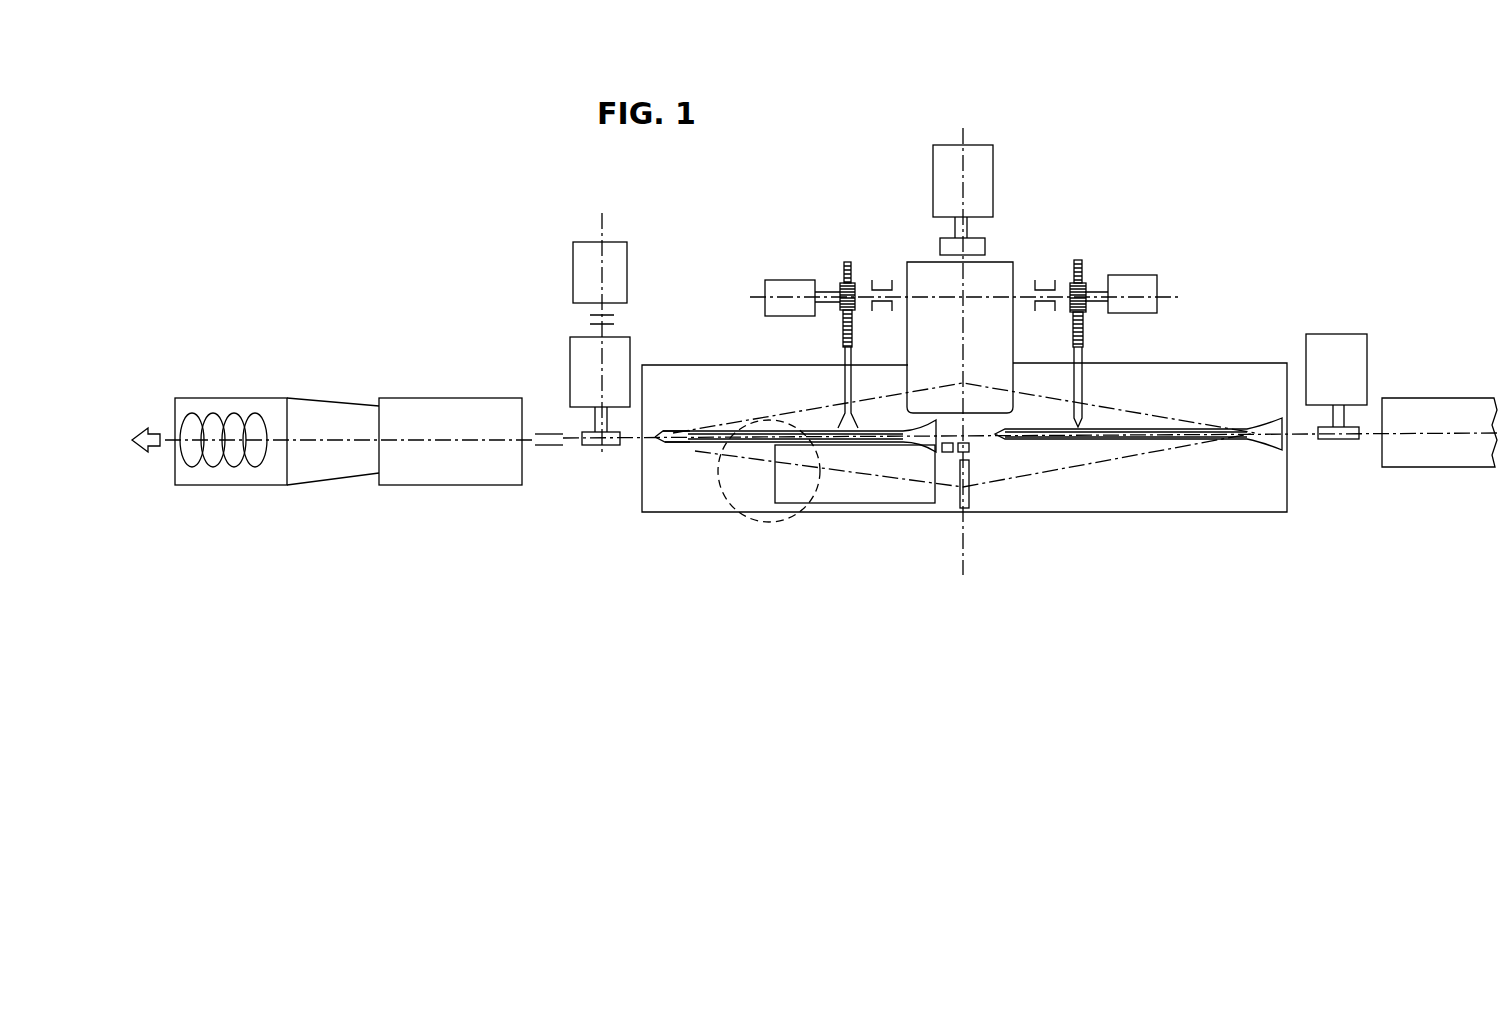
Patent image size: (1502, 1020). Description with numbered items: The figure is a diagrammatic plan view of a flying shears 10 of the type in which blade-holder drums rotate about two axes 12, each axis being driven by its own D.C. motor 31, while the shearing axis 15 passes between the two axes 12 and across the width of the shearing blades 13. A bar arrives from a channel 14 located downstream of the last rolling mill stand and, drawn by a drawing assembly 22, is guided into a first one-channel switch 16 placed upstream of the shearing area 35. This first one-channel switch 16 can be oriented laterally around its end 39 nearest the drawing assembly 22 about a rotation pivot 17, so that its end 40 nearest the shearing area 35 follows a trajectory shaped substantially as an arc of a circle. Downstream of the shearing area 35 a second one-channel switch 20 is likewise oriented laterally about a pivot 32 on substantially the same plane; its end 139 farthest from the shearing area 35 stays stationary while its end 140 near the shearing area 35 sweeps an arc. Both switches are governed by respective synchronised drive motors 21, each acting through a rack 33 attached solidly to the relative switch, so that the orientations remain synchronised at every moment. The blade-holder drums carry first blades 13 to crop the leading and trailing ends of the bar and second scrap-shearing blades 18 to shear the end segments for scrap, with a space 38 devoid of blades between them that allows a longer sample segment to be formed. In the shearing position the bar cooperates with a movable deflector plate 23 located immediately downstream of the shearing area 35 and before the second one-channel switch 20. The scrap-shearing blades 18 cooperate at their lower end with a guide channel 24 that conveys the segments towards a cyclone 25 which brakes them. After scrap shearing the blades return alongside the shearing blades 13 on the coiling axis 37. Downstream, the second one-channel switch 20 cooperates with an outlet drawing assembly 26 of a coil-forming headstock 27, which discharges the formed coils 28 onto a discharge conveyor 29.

The flying shears 10 is at (1105, 253).
The axes of the blade-holder drums 12 is at (968, 533).
The first shearing blades 13 is at (943, 453).
The channel 14 is at (1428, 418).
The shearing axis 15 is at (1003, 463).
The first one-channel switch 16 is at (1190, 432).
The rotation pivot 17 is at (1255, 436).
The second scrap-shearing blades 18 is at (962, 500).
The second one-channel switch 20 is at (860, 434).
The drive motors 21 is at (787, 292).
The drawing assembly 22 is at (1338, 360).
The movable deflector plate 23 is at (937, 447).
The guide channel 24 is at (858, 480).
The cyclone 25 is at (721, 491).
The outlet drawing assembly 26 is at (637, 325).
The coil-forming headstock 27 is at (437, 413).
The formed coils 28 is at (222, 418).
The discharge conveyor 29 is at (164, 455).
The D.C. motor 31 is at (980, 180).
The pivot 32 is at (660, 440).
The rack 33 is at (878, 292).
The shearing area 35 is at (977, 472).
The coiling axis 37 is at (1005, 450).
The space devoid of blades 38 is at (957, 456).
The end of first one-channel switch nearest the drawing assembly 39 is at (1270, 410).
The end of first one-channel switch nearest the shearing area 40 is at (999, 411).
The end of second one-channel switch farthest from the shearing area 139 is at (658, 458).
The end of second one-channel switch near the shearing area 140 is at (930, 411).